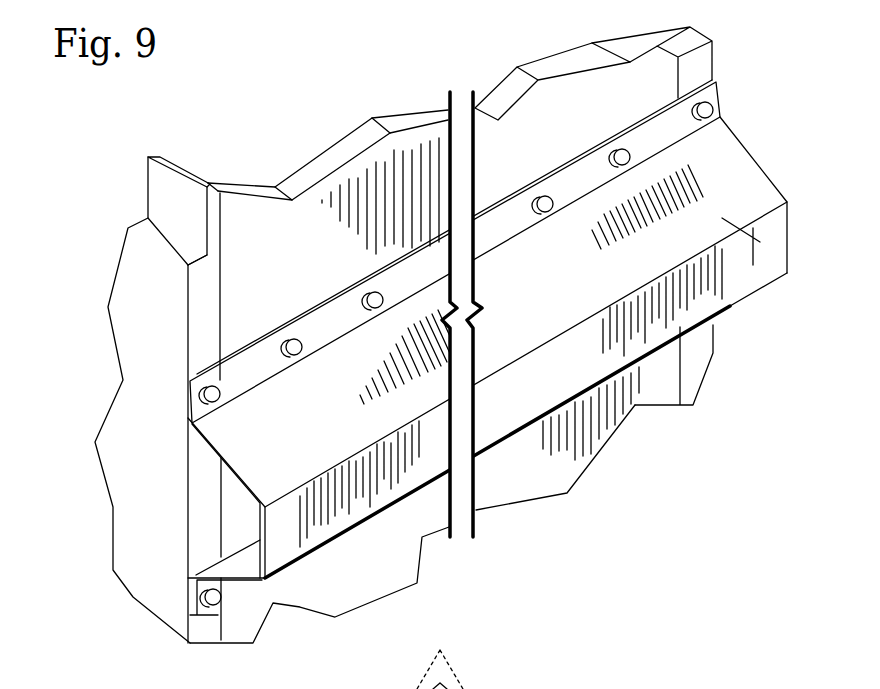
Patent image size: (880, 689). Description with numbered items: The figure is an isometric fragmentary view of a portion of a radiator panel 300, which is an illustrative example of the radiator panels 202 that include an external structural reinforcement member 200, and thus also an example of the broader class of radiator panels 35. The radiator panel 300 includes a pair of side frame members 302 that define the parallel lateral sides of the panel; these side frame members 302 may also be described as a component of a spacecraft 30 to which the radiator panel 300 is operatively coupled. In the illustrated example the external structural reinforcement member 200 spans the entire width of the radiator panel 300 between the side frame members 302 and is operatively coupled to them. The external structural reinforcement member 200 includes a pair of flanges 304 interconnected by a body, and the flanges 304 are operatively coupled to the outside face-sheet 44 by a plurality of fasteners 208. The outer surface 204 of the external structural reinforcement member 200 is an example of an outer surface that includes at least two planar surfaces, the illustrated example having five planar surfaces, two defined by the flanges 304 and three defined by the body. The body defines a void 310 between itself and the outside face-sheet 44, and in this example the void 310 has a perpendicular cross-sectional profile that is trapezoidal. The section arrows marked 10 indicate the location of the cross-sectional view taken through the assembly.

The spacecraft 30 is at (120, 170).
The radiator panel 35 is at (89, 106).
The outside face-sheet 44 is at (568, 497).
The external structural reinforcement member 200 is at (797, 222).
The radiator panel 202 is at (121, 137).
The outer surface 204 is at (778, 259).
The fasteners 208 is at (212, 397).
The radiator panel 300 is at (130, 197).
The side frame members 302 is at (182, 365).
The flanges 304 is at (494, 212).
The void 310 is at (207, 507).
The section line for FIG. 10 is at (543, 130).